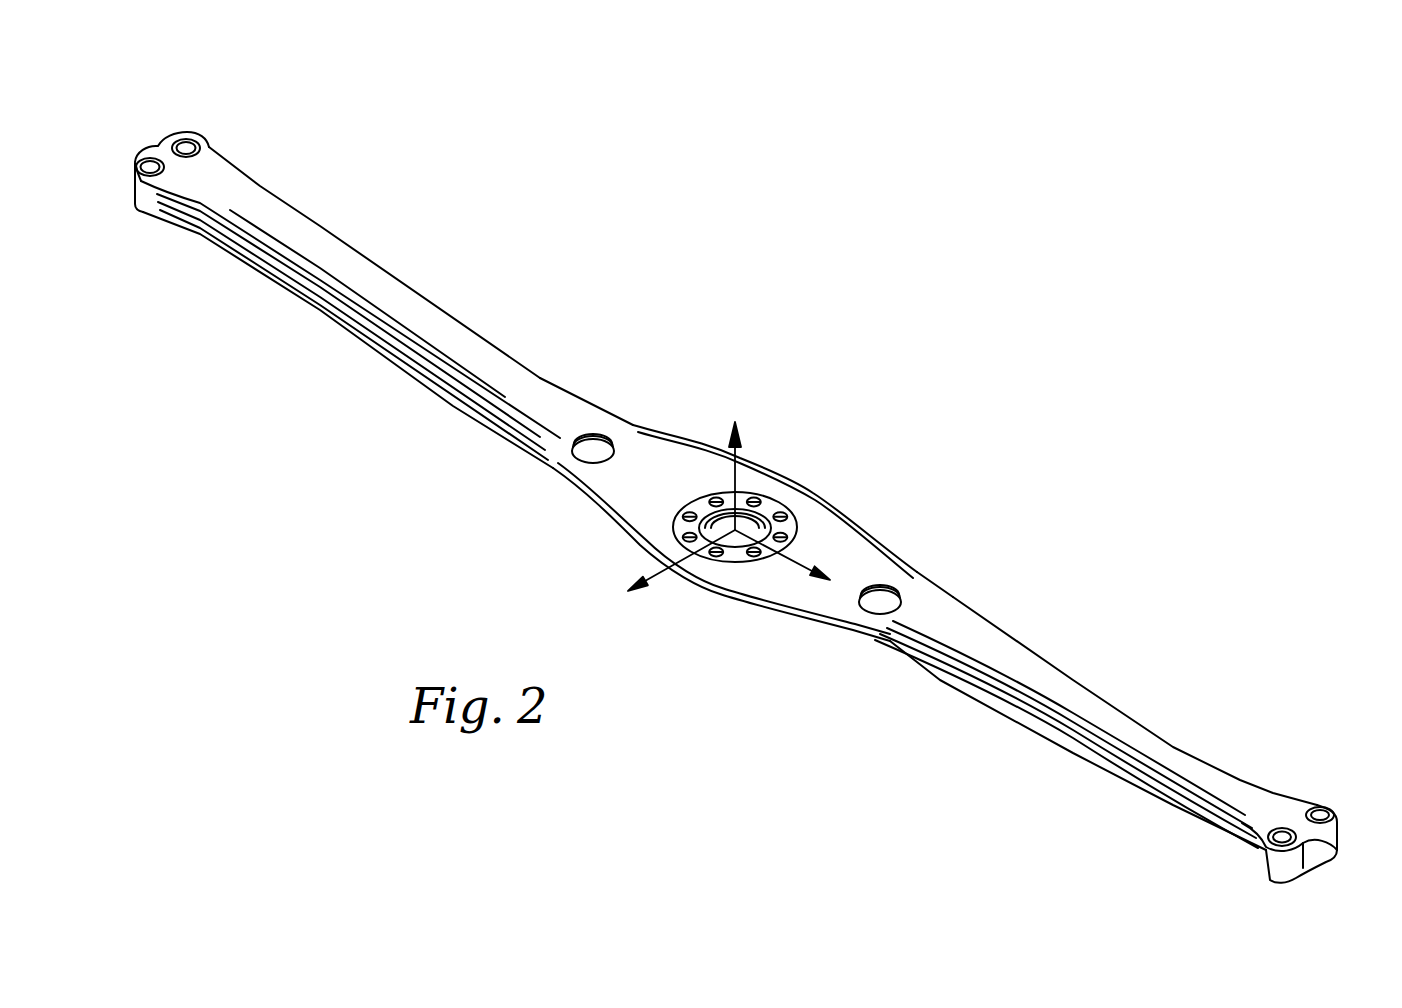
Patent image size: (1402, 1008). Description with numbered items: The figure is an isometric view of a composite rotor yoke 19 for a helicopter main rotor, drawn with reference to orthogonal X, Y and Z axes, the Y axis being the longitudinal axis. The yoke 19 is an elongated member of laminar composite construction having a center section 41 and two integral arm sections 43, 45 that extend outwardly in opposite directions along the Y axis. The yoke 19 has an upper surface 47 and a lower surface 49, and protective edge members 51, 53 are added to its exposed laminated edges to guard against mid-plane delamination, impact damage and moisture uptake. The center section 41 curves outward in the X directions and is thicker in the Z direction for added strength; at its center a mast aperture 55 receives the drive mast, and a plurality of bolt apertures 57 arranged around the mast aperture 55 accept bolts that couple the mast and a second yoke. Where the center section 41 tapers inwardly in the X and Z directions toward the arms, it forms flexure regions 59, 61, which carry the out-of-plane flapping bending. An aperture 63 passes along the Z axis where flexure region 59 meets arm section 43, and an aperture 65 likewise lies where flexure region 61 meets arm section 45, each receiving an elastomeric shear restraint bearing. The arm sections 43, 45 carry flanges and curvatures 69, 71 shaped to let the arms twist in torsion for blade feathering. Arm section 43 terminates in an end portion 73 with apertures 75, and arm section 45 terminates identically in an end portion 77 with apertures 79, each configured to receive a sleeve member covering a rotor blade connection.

The rotor yoke 19 is at (745, 485).
The center section 41 is at (784, 511).
The arm section 43 is at (350, 307).
The arm section 45 is at (1094, 723).
The upper surface 47 is at (956, 616).
The lower surface 49 is at (934, 695).
The protective edge member 51 is at (714, 597).
The protective edge member 53 is at (812, 495).
The mast aperture 55 is at (727, 543).
The bolt apertures 57 is at (687, 517).
The flexure region 59 is at (779, 408).
The flexure region 61 is at (940, 568).
The aperture 63 is at (596, 455).
The aperture 65 is at (878, 607).
The flanges and curvatures 69 is at (278, 240).
The flanges and curvatures 71 is at (1060, 727).
The end portion 73 is at (168, 149).
The apertures 75 is at (188, 147).
The end portion 77 is at (1320, 797).
The apertures 79 is at (1322, 815).